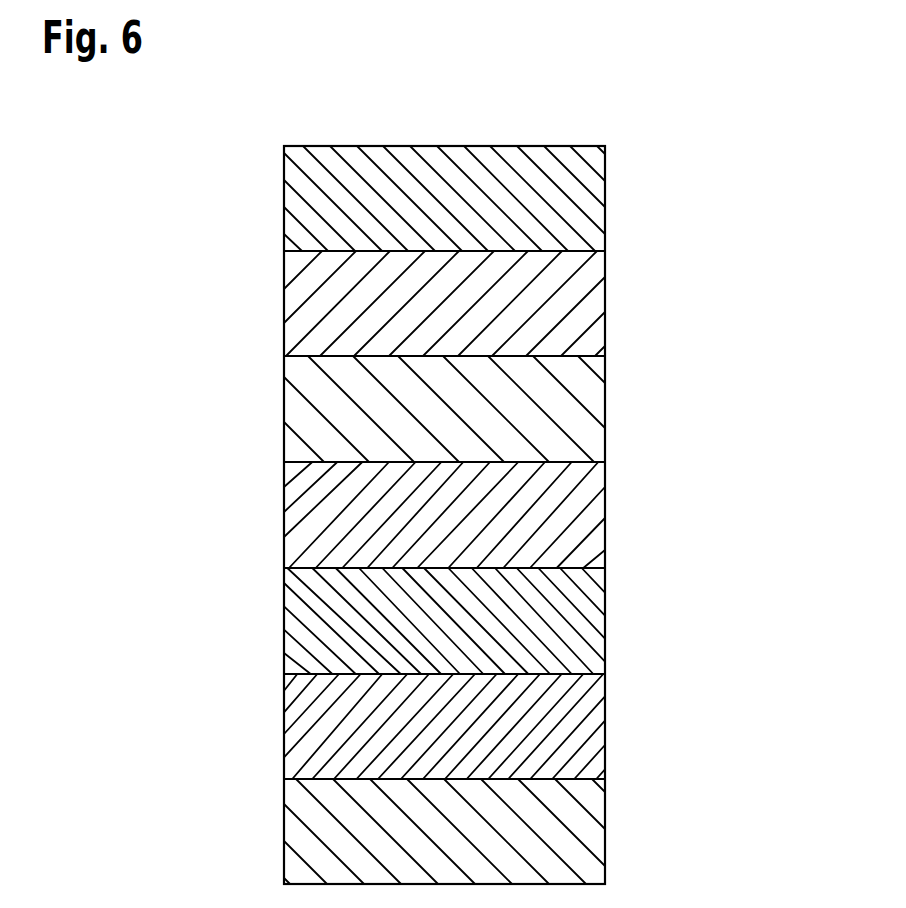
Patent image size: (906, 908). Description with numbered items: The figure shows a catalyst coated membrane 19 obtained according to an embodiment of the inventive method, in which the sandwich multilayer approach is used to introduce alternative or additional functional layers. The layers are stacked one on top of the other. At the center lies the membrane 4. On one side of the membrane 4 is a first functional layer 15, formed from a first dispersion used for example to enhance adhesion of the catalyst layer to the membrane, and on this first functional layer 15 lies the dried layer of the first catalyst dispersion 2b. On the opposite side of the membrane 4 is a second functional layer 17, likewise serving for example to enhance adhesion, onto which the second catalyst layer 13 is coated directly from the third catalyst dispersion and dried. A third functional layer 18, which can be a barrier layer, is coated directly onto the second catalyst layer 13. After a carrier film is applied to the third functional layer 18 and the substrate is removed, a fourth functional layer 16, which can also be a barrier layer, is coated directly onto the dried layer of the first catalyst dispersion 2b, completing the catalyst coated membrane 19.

The catalyst coated membrane 19 is at (673, 158).
The fourth functional layer 16 is at (310, 203).
The dried layer of the first catalyst dispersion 2b is at (310, 309).
The first functional layer 15 is at (310, 413).
The membrane 4 is at (310, 519).
The second functional layer 17 is at (310, 624).
The second catalyst layer 13 is at (310, 730).
The third functional layer 18 is at (310, 835).